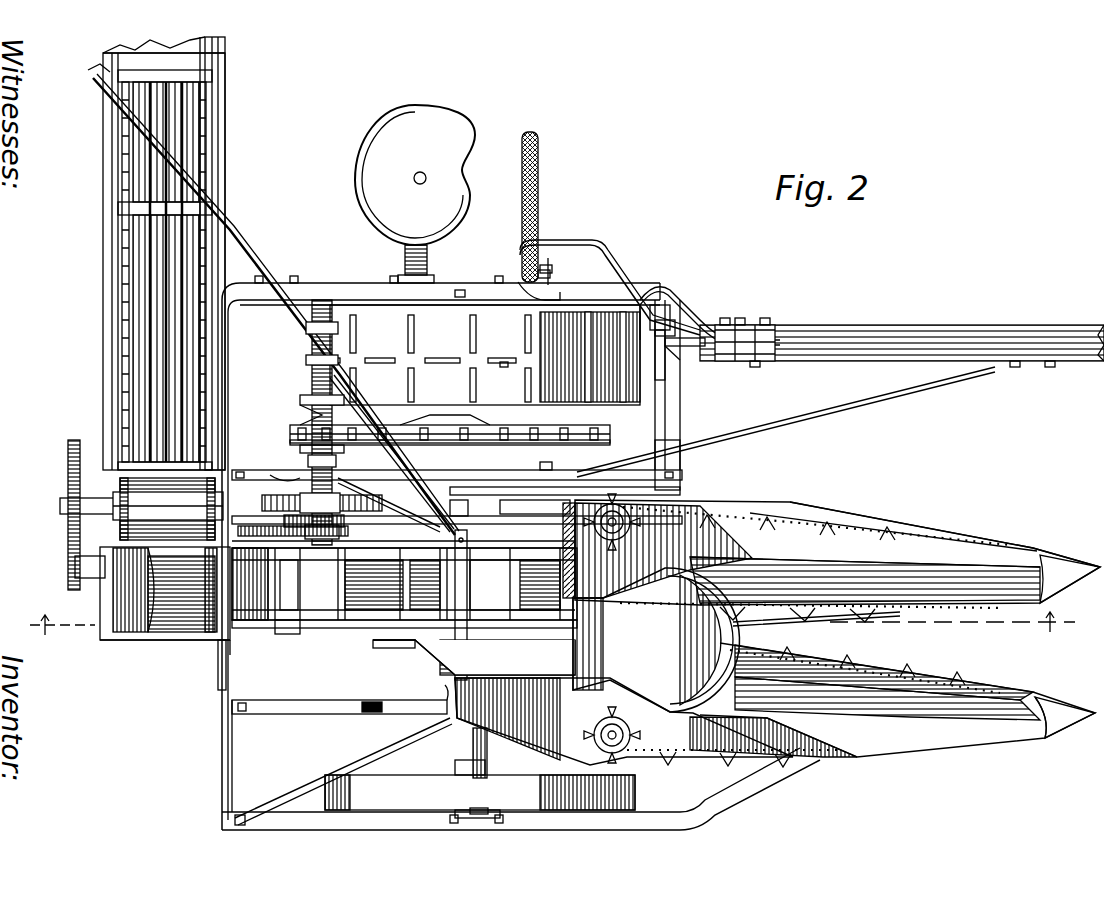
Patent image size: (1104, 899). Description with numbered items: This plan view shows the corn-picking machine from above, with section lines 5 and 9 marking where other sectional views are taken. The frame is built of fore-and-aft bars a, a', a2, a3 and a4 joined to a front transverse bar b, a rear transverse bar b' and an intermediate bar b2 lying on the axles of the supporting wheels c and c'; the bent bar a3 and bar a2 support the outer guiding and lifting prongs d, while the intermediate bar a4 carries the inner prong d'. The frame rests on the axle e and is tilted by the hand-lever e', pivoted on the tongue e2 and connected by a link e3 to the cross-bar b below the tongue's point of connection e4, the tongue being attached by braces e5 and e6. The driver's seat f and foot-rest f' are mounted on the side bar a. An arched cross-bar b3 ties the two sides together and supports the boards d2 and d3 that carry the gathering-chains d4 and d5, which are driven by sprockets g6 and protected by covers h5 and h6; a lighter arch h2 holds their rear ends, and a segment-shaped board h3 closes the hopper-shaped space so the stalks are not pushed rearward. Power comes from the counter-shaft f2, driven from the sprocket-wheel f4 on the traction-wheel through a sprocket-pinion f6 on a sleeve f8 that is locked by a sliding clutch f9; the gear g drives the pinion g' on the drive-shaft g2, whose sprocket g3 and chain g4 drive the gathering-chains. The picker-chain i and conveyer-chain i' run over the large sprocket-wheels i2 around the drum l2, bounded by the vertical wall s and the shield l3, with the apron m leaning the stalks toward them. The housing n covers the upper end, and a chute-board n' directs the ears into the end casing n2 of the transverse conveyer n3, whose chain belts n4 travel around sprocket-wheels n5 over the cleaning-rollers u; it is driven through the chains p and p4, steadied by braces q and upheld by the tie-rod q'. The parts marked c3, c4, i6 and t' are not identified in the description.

The section line 9 is at (152, 82).
The section line 5 is at (553, 624).
The housing n is at (146, 593).
The chute-board n' is at (207, 646).
The end casing n2 is at (140, 630).
The transverse conveyer n3 is at (110, 345).
The chain belts n4 is at (205, 175).
The sprocket-wheels n5 is at (125, 498).
The cleaning-rollers u is at (165, 287).
The braces q is at (302, 539).
The tie-rod q' is at (273, 299).
The chain p4 is at (66, 528).
The chain p is at (345, 540).
The fore-and-aft bar a is at (441, 539).
The fore-and-aft bar a' is at (457, 471).
The fore-and-aft bar a2 is at (335, 700).
The frame-bar a3 is at (412, 815).
The intermediate fore-and-aft bar a4 is at (750, 620).
The driver's seat f is at (415, 277).
The foot-rest f' is at (540, 216).
The counter-shaft f2 is at (314, 380).
The sprocket-wheel f4 is at (462, 428).
The sprocket-pinion f6 is at (300, 440).
The sleeve f8 is at (300, 452).
The sliding clutch f9 is at (312, 412).
The axle e is at (470, 554).
The hand-lever e' is at (610, 287).
The tongue e2 is at (893, 333).
The link e3 is at (680, 360).
The point of connection e4 is at (562, 280).
The brace e5 is at (690, 305).
The brace e6 is at (830, 413).
The traction-wheel c is at (485, 355).
The supporting-wheel c' is at (516, 806).
The box bracket c3 is at (670, 345).
The box slot c4 is at (474, 379).
The front transverse bar b is at (684, 395).
The rear transverse bar b' is at (207, 696).
The intermediate transverse bar b2 is at (466, 520).
The arched cross-bar b3 is at (518, 525).
The gear g is at (351, 491).
The pinion g' is at (285, 465).
The drive-shaft g2 is at (285, 528).
The sprocket-wheel g3 is at (380, 525).
The chain g4 is at (400, 525).
The driving-sprockets g6 is at (630, 525).
The picker-chain i is at (404, 596).
The conveyer-chain i' is at (528, 605).
The sprocket-wheels i2 is at (275, 560).
The rod i6 is at (406, 640).
The drum l2 is at (289, 585).
The shield l3 is at (372, 640).
The bracket t' is at (291, 672).
The apron m is at (440, 655).
The vertical wall s is at (490, 560).
The arch h2 is at (460, 578).
The segment-shaped board h3 is at (656, 640).
The cover h5 is at (897, 700).
The cover h6 is at (831, 554).
The outer guiding and lifting prongs d is at (1060, 737).
The inner guiding and lifting prong d' is at (1070, 560).
The board d2 is at (858, 783).
The board d3 is at (825, 508).
The gathering-chain d4 is at (780, 770).
The gathering-chain d5 is at (875, 616).